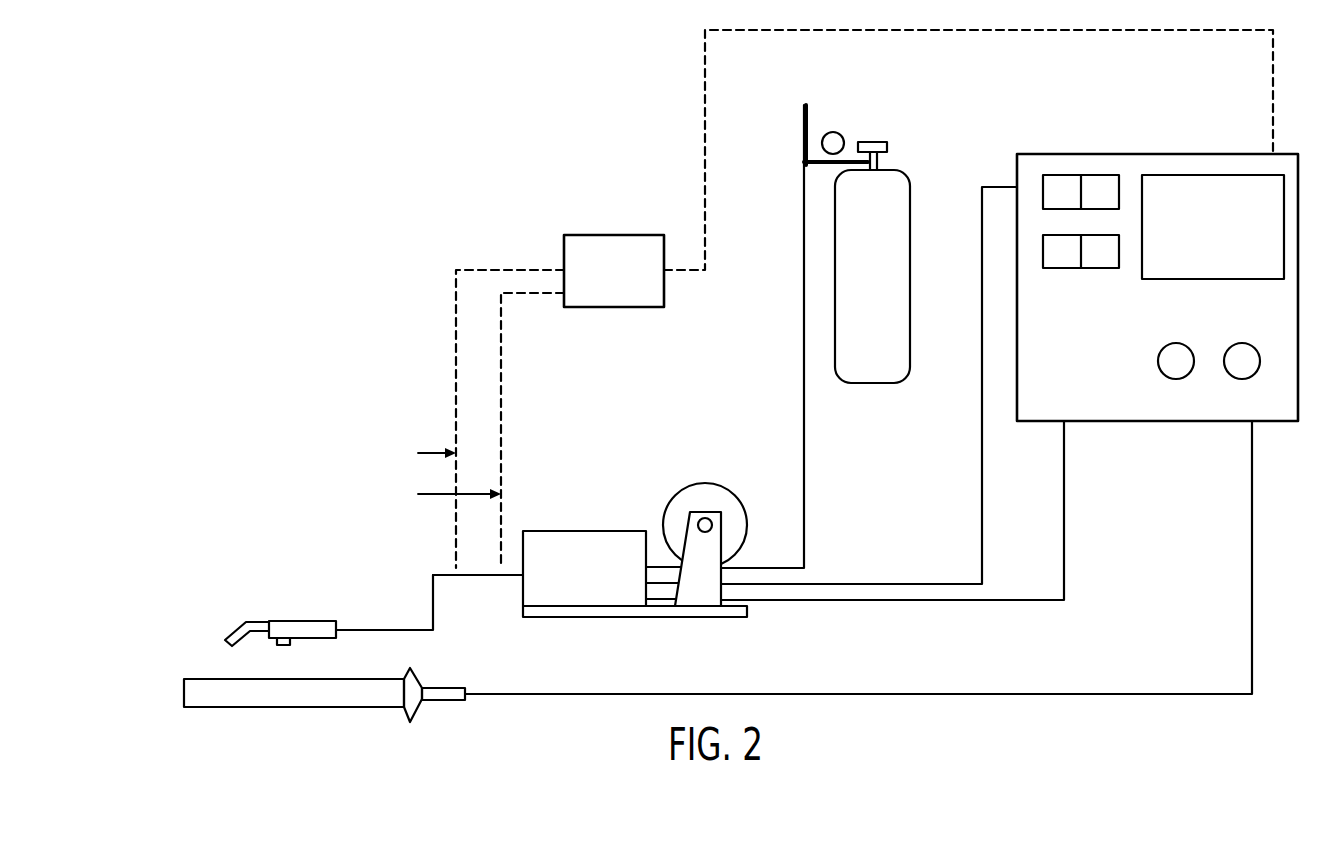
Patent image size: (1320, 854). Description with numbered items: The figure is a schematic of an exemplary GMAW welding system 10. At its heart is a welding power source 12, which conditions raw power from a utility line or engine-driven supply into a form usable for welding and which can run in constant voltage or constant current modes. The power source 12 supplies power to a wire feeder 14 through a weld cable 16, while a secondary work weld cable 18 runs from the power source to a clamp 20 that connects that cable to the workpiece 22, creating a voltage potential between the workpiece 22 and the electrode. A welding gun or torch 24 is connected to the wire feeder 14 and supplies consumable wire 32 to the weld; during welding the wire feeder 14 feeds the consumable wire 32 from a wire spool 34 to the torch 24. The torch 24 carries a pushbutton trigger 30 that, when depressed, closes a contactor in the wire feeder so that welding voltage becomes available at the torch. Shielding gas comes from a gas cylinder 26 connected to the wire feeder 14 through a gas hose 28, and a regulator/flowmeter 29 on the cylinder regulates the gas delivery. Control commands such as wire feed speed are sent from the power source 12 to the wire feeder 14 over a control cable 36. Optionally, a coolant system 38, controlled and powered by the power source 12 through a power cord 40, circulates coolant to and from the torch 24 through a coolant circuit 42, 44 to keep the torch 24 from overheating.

The GMAW welding system 10 is at (436, 116).
The welding power source 12 is at (1197, 154).
The wire feeder 14 is at (694, 618).
The weld cable 16 is at (1010, 600).
The secondary work weld cable 18 is at (897, 696).
The clamp 20 is at (422, 706).
The workpiece 22 is at (348, 679).
The welding gun or torch 24 is at (313, 608).
The gas cylinder 26 is at (859, 295).
The gas hose 28 is at (803, 395).
The regulator/flowmeter 29 is at (842, 132).
The pushbutton trigger 30 is at (285, 647).
The consumable wire 32 is at (676, 483).
The wire spool 34 is at (745, 512).
The control cable 36 is at (981, 492).
The coolant system 38 is at (614, 307).
The power cord 40 is at (703, 137).
The coolant circuit 42 is at (510, 268).
The coolant circuit 44 is at (501, 393).